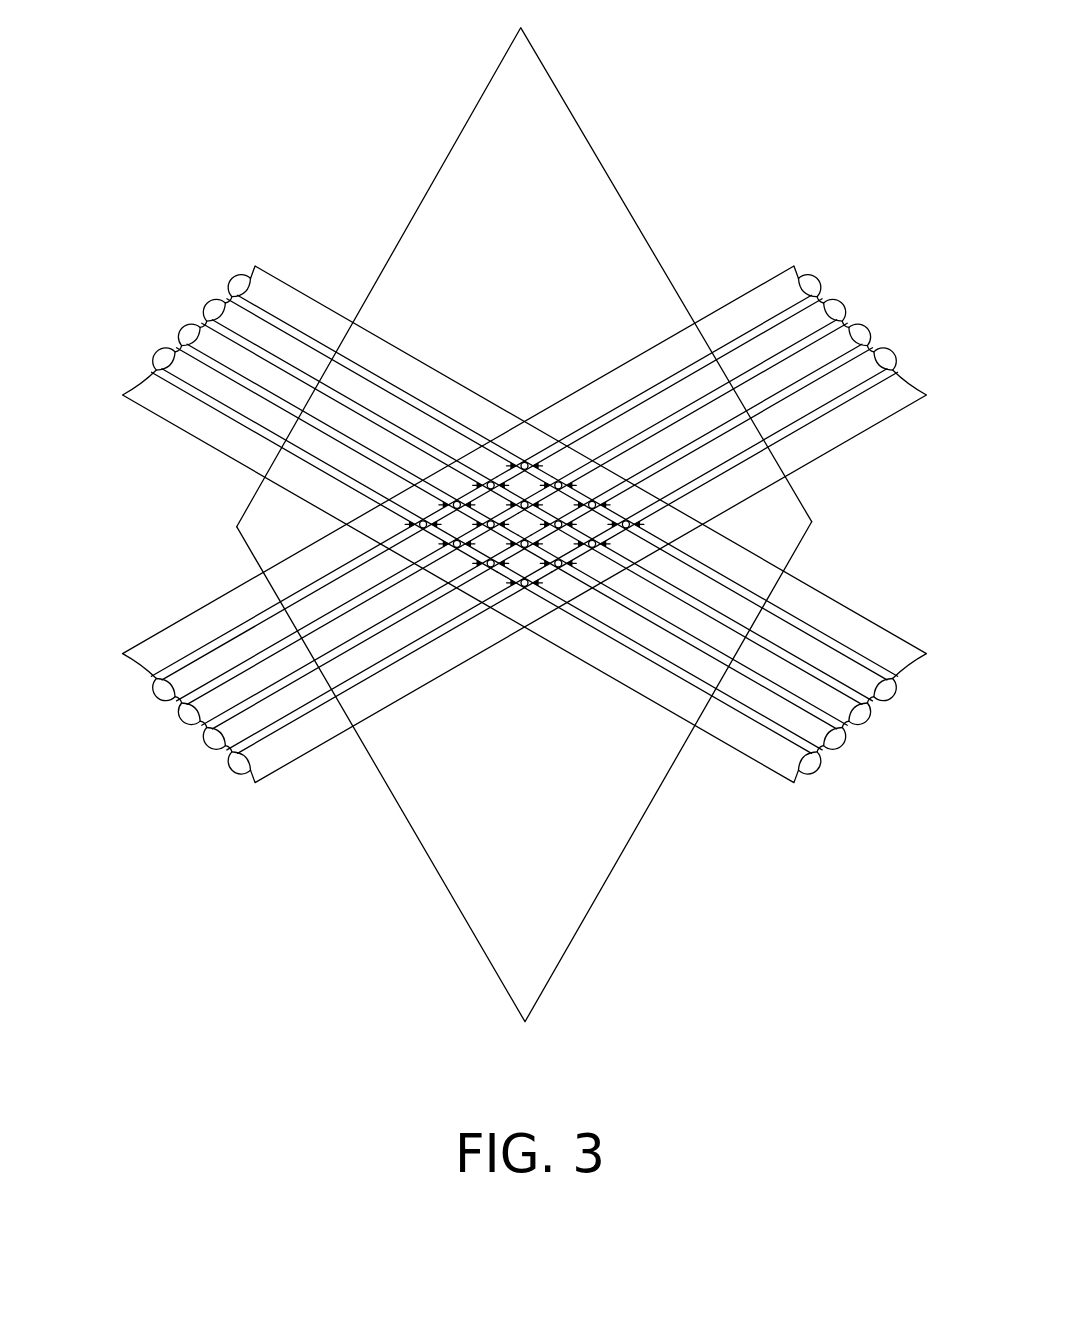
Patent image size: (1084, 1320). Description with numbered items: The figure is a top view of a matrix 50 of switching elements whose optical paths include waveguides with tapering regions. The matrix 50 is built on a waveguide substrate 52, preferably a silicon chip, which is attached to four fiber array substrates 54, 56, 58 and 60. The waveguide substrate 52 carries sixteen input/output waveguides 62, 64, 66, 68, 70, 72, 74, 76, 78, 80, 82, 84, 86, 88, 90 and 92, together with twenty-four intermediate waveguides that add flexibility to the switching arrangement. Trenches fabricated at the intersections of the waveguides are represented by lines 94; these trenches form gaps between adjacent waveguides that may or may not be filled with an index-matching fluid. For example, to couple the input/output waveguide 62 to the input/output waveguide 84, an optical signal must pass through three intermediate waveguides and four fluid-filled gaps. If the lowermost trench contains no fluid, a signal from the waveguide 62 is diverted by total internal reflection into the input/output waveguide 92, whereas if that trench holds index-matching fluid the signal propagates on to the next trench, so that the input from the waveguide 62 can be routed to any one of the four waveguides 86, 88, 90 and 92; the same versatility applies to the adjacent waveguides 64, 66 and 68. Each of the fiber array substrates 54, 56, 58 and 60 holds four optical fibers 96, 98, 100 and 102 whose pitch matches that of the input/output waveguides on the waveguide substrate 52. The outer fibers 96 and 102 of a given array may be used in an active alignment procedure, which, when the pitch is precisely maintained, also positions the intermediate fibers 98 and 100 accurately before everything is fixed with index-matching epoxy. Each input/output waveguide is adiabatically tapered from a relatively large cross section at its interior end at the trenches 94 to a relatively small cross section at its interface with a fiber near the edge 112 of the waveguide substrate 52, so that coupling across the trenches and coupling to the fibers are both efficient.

The matrix 50 is at (702, 95).
The waveguide substrate 52 is at (479, 103).
The fiber array substrate 54 is at (306, 296).
The fiber array substrate 56 is at (742, 296).
The fiber array substrate 58 is at (746, 753).
The fiber array substrate 60 is at (312, 753).
The input/output waveguide 62 is at (347, 690).
The input/output waveguide 64 is at (373, 635).
The input/output waveguide 66 is at (393, 583).
The input/output waveguide 68 is at (330, 573).
The input/output waveguide 70 is at (330, 479).
The input/output waveguide 72 is at (327, 425).
The input/output waveguide 74 is at (380, 415).
The input/output waveguide 76 is at (448, 418).
The input/output waveguide 78 is at (601, 418).
The input/output waveguide 80 is at (669, 415).
The input/output waveguide 82 is at (722, 425).
The input/output waveguide 84 is at (719, 479).
The input/output waveguide 86 is at (719, 571).
The input/output waveguide 88 is at (702, 690).
The input/output waveguide 90 is at (676, 635).
The input/output waveguide 92 is at (656, 583).
The trenches 94 is at (474, 483).
The optical fiber 96 is at (165, 355).
The optical fiber 98 is at (190, 327).
The optical fiber 100 is at (220, 301).
The optical fiber 102 is at (244, 271).
The edge 112 is at (479, 944).